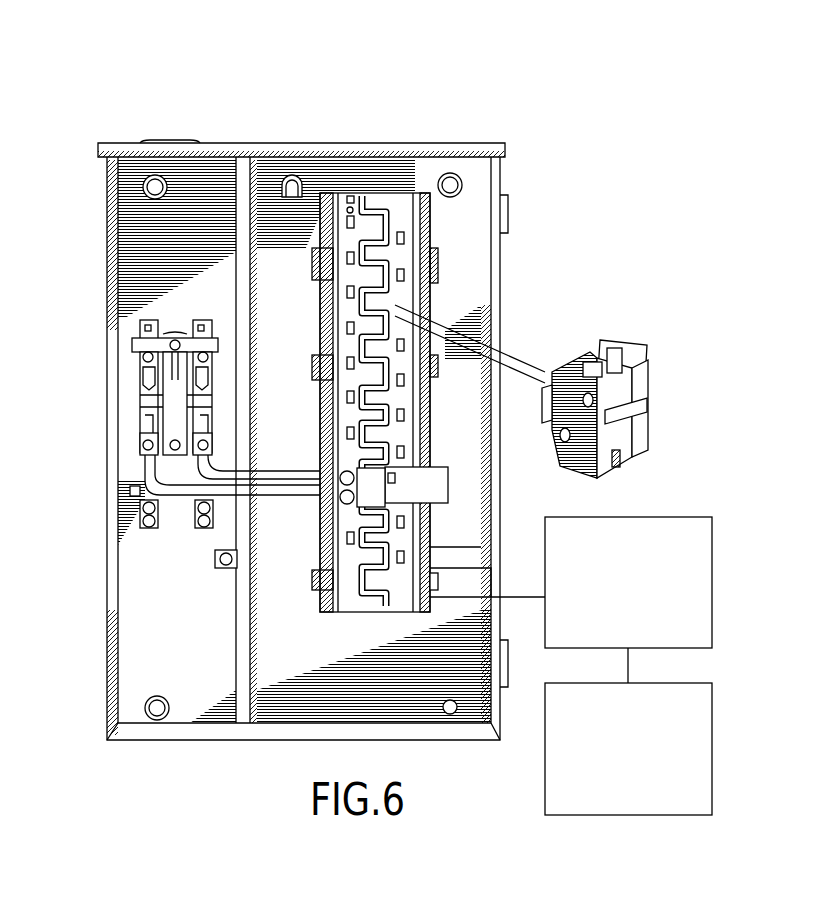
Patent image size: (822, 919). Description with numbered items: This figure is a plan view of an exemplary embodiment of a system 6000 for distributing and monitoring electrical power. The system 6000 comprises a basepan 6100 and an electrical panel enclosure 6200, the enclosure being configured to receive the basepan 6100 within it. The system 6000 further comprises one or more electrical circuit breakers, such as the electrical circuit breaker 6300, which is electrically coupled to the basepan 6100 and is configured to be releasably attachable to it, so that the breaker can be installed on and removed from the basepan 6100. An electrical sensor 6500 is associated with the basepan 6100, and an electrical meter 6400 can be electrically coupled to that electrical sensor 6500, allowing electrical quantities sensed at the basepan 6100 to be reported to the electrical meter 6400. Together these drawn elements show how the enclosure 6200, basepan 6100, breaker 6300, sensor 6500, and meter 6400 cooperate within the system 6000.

The system 6000 is at (112, 46).
The basepan 6100 is at (404, 222).
The electrical panel enclosure 6200 is at (287, 138).
The electrical circuit breaker 6300 is at (628, 337).
The electrical meter 6400 is at (607, 792).
The electrical sensor 6500 is at (607, 626).